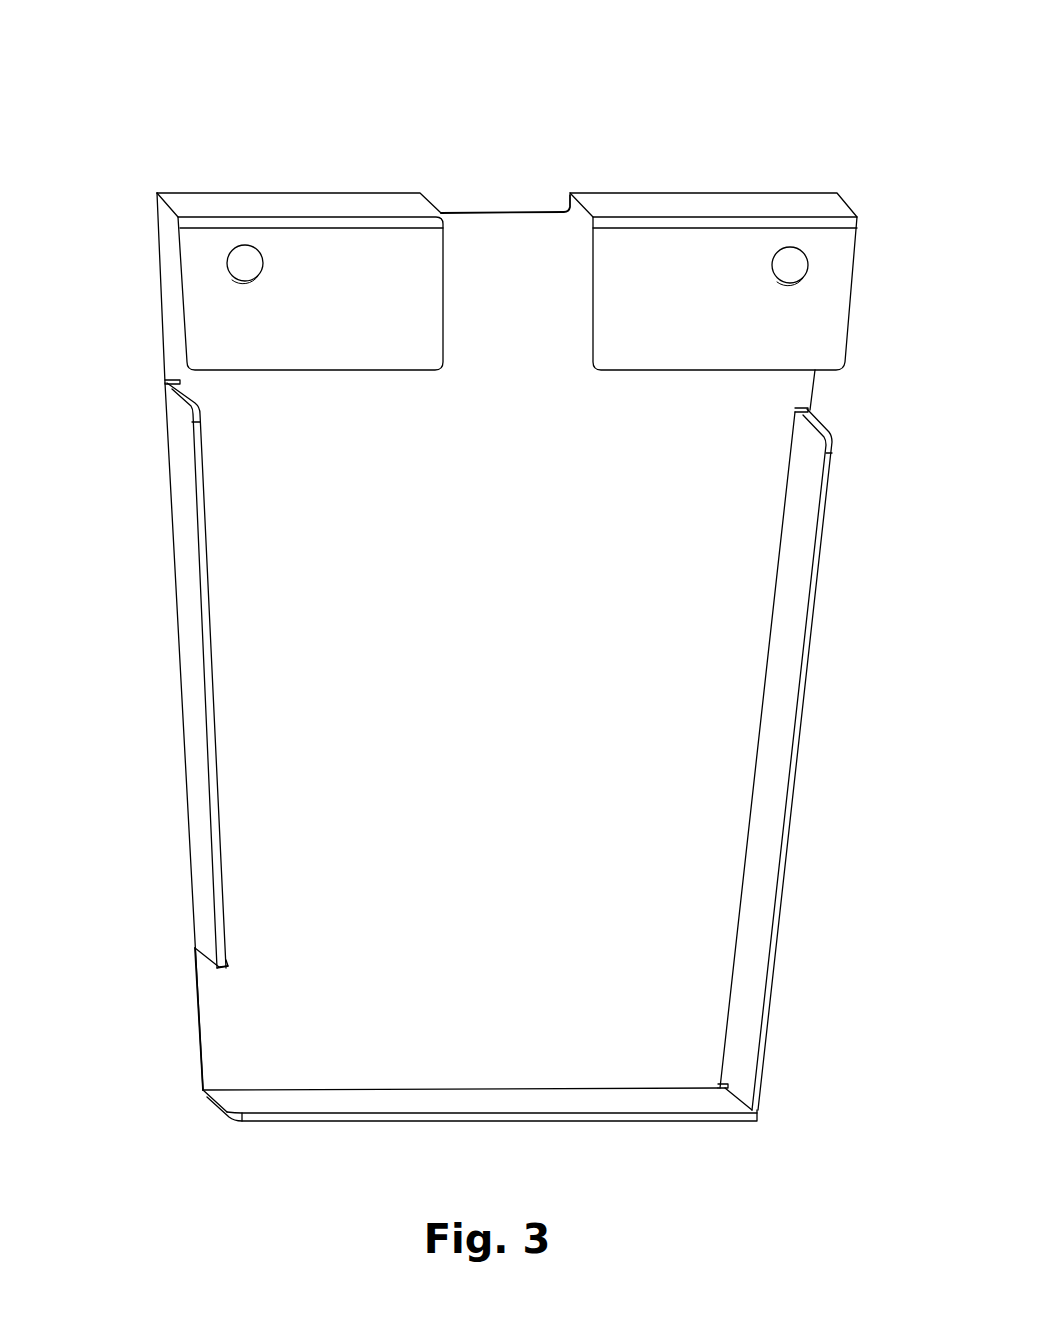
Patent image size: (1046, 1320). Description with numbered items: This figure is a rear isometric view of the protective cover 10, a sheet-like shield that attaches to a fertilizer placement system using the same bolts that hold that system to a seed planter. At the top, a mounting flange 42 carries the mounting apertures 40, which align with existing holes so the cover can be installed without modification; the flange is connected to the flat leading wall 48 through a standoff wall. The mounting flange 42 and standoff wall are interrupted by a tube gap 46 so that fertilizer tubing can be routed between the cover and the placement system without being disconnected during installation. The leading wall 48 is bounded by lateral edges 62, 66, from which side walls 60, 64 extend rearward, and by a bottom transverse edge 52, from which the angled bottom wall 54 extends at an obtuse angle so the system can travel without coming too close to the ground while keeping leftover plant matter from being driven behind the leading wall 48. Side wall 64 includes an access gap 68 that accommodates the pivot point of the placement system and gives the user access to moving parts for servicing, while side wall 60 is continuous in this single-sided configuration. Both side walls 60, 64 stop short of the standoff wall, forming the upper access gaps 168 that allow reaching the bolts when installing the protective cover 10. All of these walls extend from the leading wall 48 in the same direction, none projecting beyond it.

The protective cover 10 is at (268, 112).
The mounting apertures 40 is at (227, 265).
The mounting flange 42 is at (350, 319).
The tube gap 46 is at (519, 181).
The leading wall 48 is at (508, 659).
The bottom transverse edge 52 is at (617, 1088).
The angled bottom wall 54 is at (452, 1098).
The side wall 60 is at (797, 753).
The lateral edge 62 is at (777, 603).
The side wall 64 is at (195, 728).
The lateral edge 66 is at (173, 532).
The access gap 68 is at (182, 1019).
The upper access gaps 168 is at (165, 337).